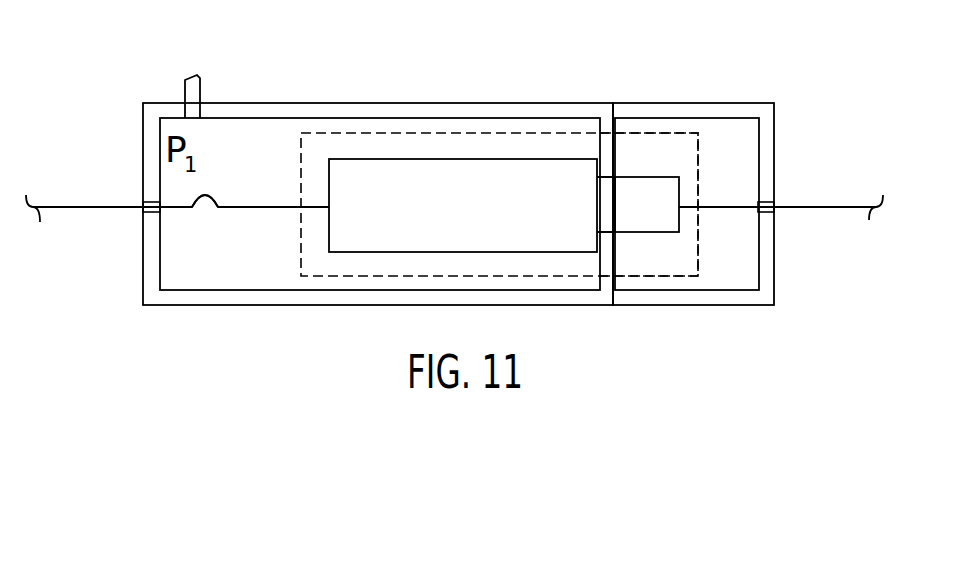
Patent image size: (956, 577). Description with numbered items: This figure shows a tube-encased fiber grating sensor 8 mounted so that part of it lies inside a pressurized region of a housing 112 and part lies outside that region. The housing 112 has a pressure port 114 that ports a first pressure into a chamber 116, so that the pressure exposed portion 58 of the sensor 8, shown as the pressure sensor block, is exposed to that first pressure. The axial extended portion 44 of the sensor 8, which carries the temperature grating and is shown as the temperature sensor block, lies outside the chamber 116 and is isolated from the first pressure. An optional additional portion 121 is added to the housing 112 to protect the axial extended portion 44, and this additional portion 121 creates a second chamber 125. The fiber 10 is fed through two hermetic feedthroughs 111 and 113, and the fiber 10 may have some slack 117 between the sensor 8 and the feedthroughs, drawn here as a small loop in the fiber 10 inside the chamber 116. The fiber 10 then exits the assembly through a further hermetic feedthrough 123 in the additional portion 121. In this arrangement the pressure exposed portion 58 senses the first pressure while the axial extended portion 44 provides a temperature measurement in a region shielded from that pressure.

The sensor 8 is at (295, 150).
The fiber 10 is at (90, 205).
The axial extended portion 44 is at (637, 177).
The pressure exposed portion 58 is at (582, 220).
The hermetic feedthrough 111 is at (155, 209).
The housing 112 is at (141, 95).
The hermetic feedthrough 113 is at (649, 204).
The pressure port 114 is at (198, 90).
The chamber 116 is at (218, 275).
The slack 117 is at (205, 197).
The additional portion 121 is at (719, 98).
The hermetic feedthrough 123 is at (772, 212).
The chamber 125 is at (750, 285).